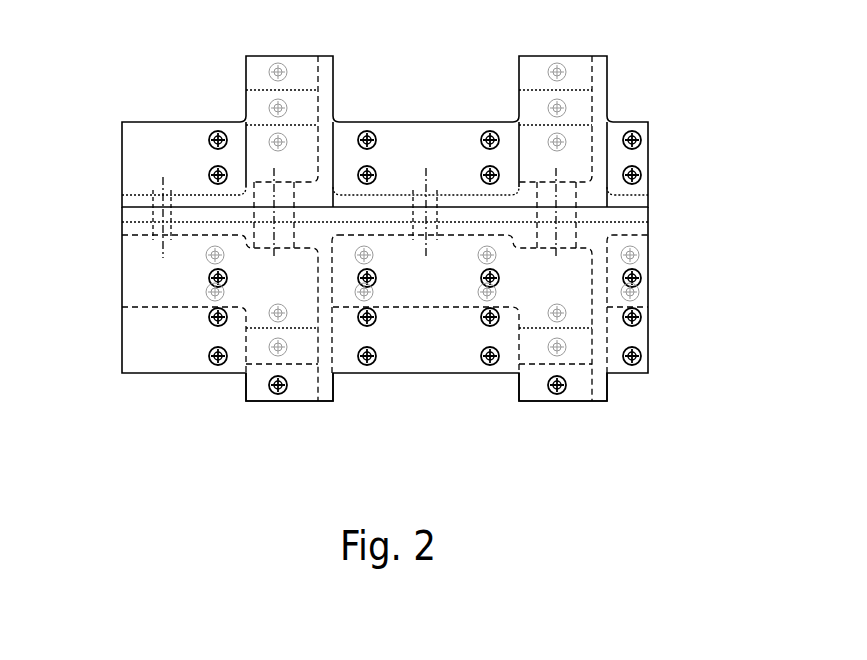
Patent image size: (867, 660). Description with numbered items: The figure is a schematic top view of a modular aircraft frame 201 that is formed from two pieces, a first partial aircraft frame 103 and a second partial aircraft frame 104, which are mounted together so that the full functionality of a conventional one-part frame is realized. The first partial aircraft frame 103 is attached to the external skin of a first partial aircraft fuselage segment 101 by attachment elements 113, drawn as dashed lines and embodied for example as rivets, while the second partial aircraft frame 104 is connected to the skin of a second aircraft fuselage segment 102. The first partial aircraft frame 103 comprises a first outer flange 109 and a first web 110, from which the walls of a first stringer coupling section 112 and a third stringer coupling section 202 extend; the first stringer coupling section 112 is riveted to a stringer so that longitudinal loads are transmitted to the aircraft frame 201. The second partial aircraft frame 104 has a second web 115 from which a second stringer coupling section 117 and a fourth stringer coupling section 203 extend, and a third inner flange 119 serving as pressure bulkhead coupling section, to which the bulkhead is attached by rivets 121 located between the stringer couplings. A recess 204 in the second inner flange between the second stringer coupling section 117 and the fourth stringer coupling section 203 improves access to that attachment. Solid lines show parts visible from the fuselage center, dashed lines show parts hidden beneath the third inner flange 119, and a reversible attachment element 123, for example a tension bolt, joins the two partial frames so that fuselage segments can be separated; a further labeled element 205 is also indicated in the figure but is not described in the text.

The first plate 101 is at (683, 153).
The second plate 102 is at (670, 328).
The pivot axis 103 is at (437, 158).
The second plate body portion 104 is at (391, 355).
The first plate lobe 109 is at (155, 150).
The hinge knuckle 110 is at (135, 202).
The first plate tab 112 is at (322, 95).
The fastener 113 is at (220, 130).
The second plate hinge portion 115 is at (135, 229).
The second plate tab 117 is at (322, 388).
The second plate lobe 119 is at (185, 338).
The fastener 121 is at (484, 365).
The hinge pin 123 is at (162, 188).
The joint line 201 is at (750, 212).
The first plate right tab 202 is at (598, 92).
The second plate right tab 203 is at (597, 380).
The second plate middle lobe 204 is at (431, 300).
The tab fastener 205 is at (552, 395).